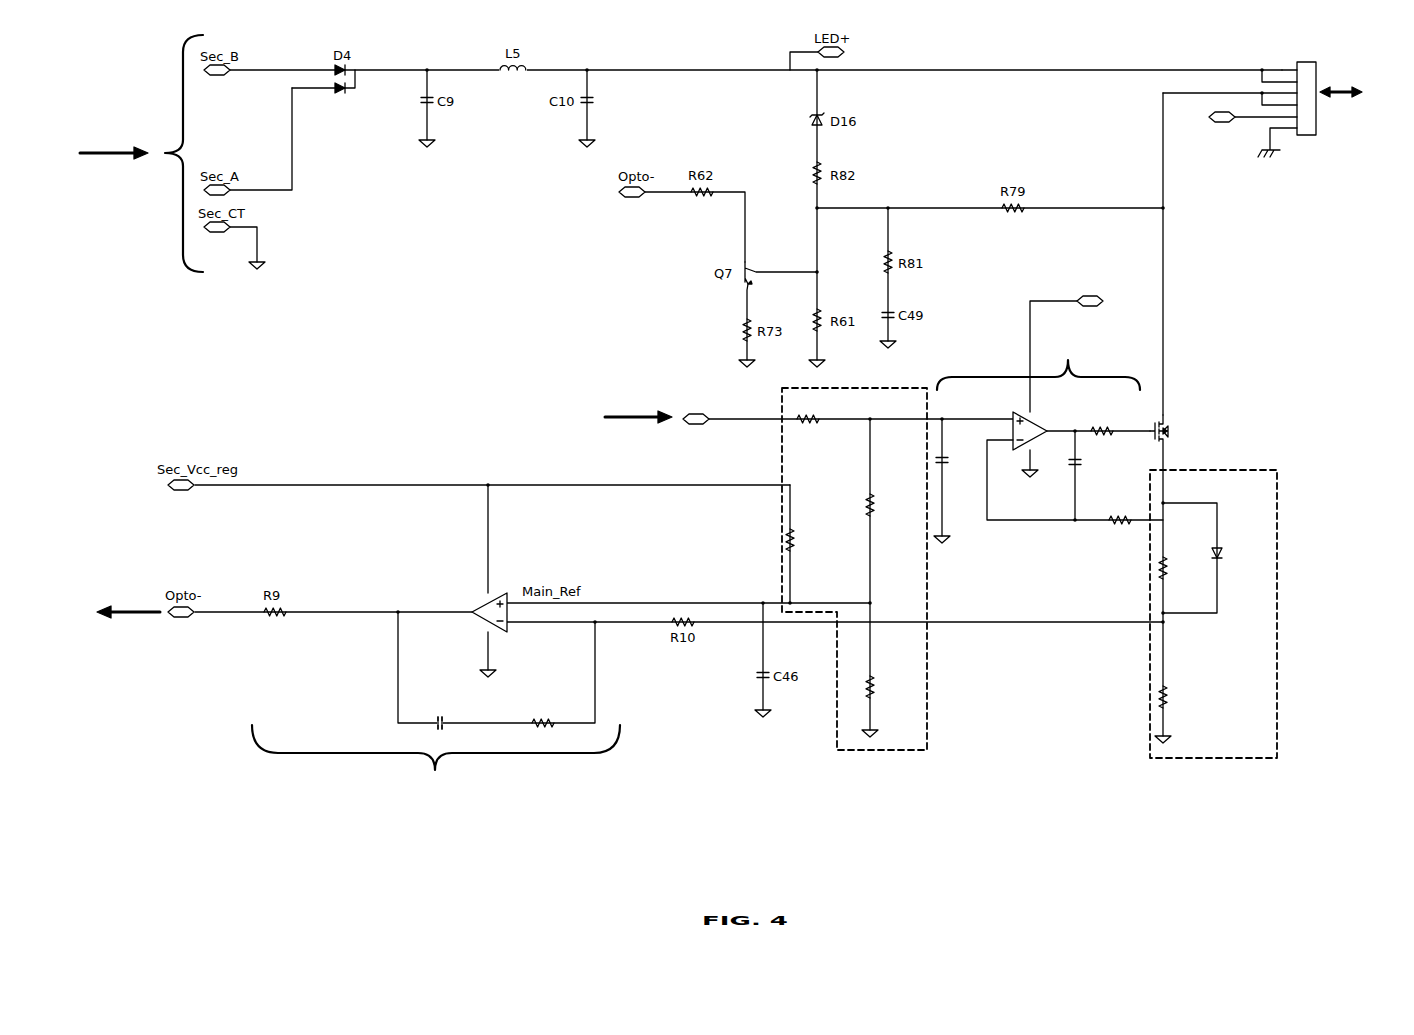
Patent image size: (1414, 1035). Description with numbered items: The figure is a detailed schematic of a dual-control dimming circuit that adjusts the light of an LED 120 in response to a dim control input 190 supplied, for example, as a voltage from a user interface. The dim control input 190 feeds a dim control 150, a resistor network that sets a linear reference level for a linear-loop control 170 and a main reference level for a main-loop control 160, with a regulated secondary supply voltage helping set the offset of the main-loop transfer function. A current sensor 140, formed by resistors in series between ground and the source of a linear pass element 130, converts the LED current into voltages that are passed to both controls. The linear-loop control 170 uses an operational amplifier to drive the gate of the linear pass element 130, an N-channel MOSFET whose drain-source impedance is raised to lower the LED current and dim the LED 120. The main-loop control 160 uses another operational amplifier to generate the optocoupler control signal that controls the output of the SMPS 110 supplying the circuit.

The SMPS 110 is at (115, 123).
The LED 120 is at (1383, 65).
The linear pass element 130 is at (1174, 412).
The current sensor 140 is at (1208, 760).
The dim control 150 is at (881, 758).
The main-loop control 160 is at (437, 800).
The linear-loop control 170 is at (1068, 345).
The dim control input 190 is at (660, 386).